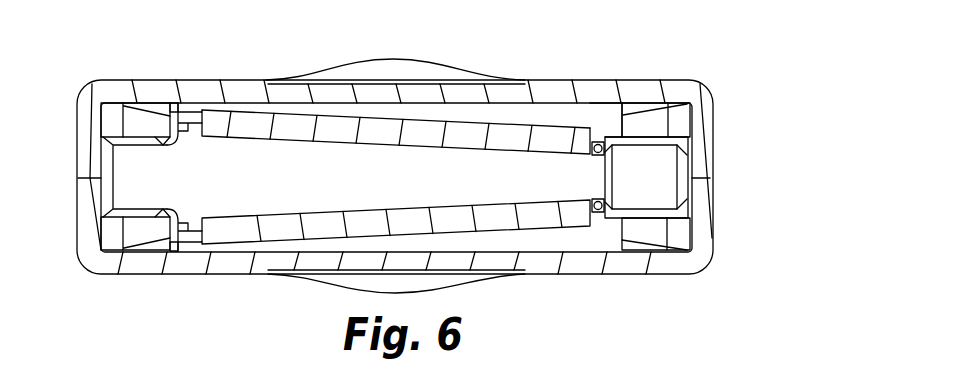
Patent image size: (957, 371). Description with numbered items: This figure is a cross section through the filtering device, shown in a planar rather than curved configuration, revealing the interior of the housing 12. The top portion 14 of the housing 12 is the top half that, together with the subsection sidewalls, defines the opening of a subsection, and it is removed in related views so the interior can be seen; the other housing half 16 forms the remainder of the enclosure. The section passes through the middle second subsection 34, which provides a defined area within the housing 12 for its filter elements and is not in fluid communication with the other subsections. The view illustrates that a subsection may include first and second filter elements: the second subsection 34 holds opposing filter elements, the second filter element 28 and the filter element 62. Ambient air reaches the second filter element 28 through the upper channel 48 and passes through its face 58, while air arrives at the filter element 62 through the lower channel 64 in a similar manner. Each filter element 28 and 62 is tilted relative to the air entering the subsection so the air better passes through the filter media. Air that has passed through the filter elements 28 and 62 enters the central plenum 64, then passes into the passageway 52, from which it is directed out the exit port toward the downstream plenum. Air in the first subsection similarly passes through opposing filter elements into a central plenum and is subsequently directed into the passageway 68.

The housing 12 is at (709, 79).
The top portion 14 is at (88, 129).
The second housing portion 16 is at (98, 260).
The second filter element 28 is at (470, 135).
The second subsection 34 is at (603, 99).
The upper channel 48 is at (656, 123).
The passageway 52 is at (163, 186).
The face 58 is at (542, 127).
The filter element 62 is at (535, 218).
The lower channel 64 is at (680, 236).
The passageway 68 is at (656, 186).